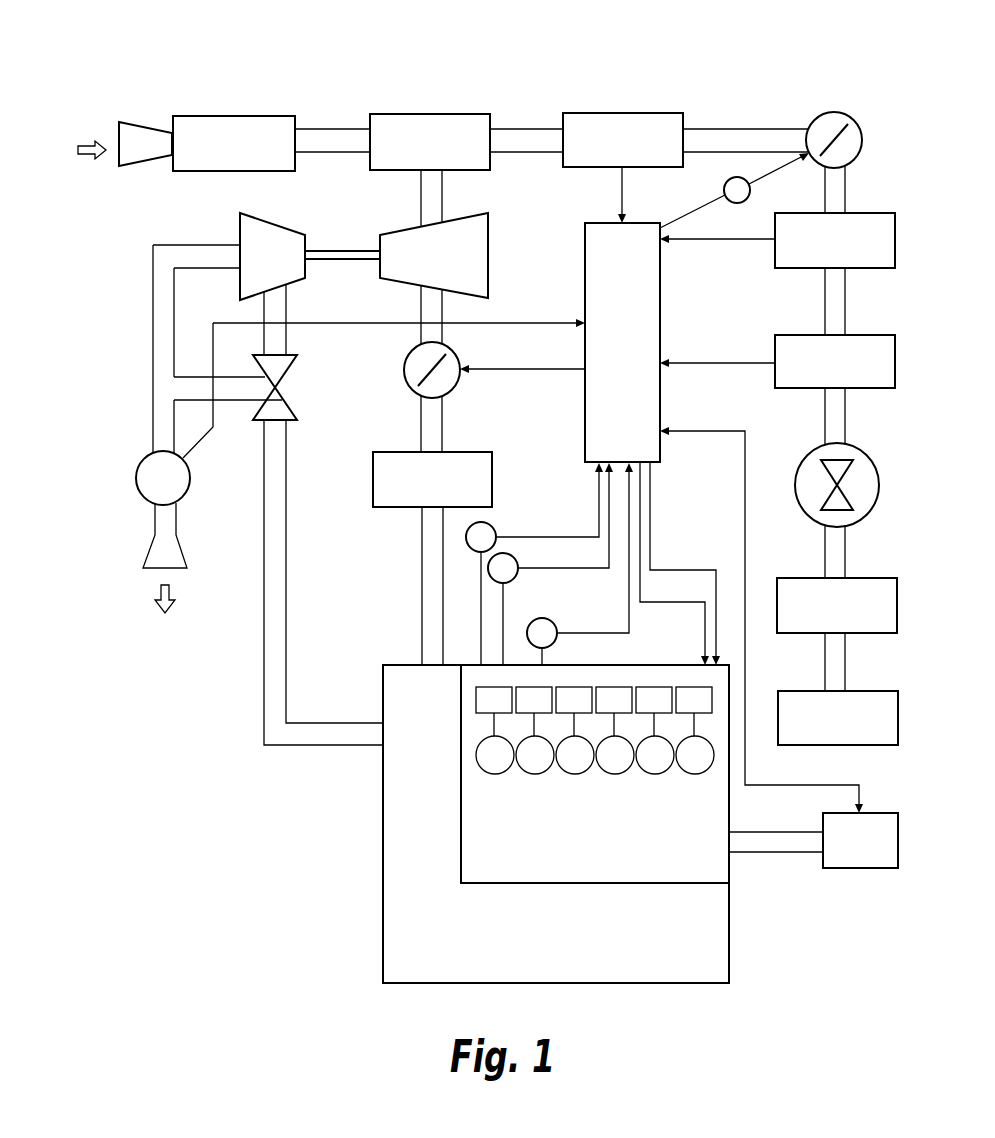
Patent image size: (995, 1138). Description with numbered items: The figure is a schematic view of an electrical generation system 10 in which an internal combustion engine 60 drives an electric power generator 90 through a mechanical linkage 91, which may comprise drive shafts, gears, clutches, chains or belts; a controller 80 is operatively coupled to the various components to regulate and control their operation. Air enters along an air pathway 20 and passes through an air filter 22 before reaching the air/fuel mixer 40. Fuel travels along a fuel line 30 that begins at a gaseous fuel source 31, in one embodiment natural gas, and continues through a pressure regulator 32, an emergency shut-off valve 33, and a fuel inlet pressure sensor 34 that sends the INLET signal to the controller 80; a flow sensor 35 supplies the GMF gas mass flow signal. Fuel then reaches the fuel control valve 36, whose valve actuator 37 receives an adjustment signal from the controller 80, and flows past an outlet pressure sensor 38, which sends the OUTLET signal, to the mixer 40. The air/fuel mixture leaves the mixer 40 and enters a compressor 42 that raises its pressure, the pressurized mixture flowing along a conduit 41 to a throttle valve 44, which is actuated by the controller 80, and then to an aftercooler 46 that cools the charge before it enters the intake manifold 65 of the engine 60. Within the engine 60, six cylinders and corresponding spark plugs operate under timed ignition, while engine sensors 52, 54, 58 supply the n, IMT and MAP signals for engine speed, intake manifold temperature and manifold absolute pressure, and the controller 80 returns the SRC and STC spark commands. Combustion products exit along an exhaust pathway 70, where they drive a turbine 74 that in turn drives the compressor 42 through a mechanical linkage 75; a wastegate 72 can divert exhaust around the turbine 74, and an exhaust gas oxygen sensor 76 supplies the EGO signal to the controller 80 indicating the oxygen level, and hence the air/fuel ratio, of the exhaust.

The electrical generation system 10 is at (545, 78).
The air pathway 20 is at (131, 114).
The air filter 22 is at (258, 115).
The air/fuel mixer 40 is at (388, 113).
The outlet pressure sensor 38 is at (625, 112).
The fuel line 30 is at (720, 122).
The fuel control valve 36 is at (832, 111).
The valve actuator 37 is at (724, 190).
The flow sensor 35 is at (860, 212).
The fuel inlet pressure sensor 34 is at (795, 335).
The emergency shut-off valve 33 is at (873, 458).
The pressure regulator 32 is at (778, 578).
The gaseous fuel source 31 is at (795, 691).
The compressor 42 is at (490, 262).
The turbine 74 is at (240, 228).
The mechanical linkage 75 is at (352, 250).
The controller 80 is at (662, 314).
The throttle valve 44 is at (405, 372).
The wastegate 72 is at (290, 402).
The aftercooler 46 is at (383, 451).
The conduit 41 is at (417, 580).
The exhaust gas oxygen sensor 76 is at (190, 482).
The exhaust pathway 70 is at (222, 700).
The engine sensor 52 is at (493, 525).
The engine sensor 54 is at (492, 580).
The engine sensor 58 is at (557, 640).
The engine 60 is at (625, 837).
The intake manifold 65 is at (570, 944).
The mechanical linkage 91 is at (790, 853).
The electric power generator 90 is at (857, 868).